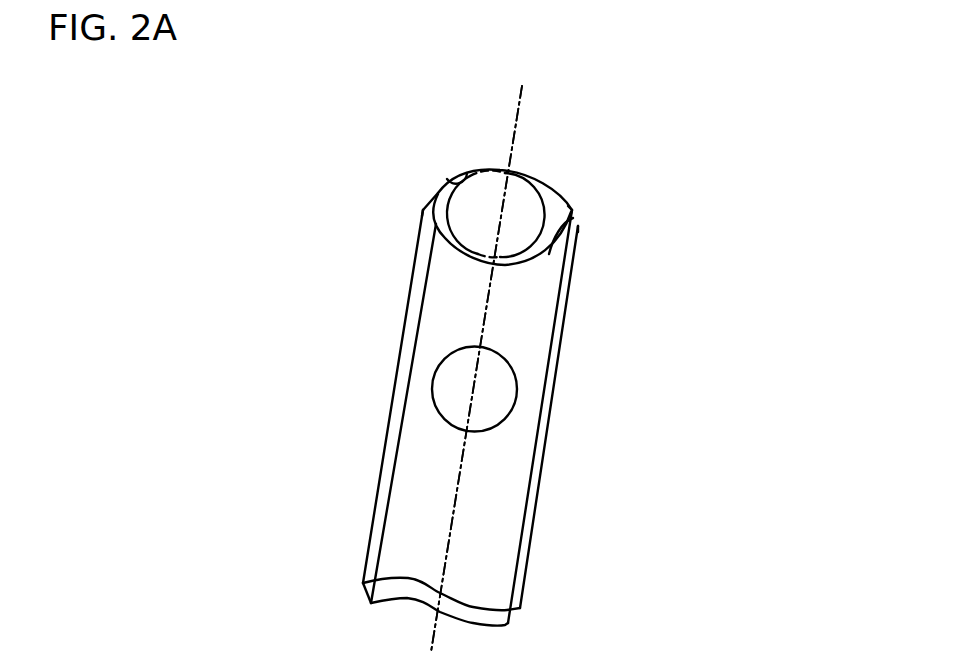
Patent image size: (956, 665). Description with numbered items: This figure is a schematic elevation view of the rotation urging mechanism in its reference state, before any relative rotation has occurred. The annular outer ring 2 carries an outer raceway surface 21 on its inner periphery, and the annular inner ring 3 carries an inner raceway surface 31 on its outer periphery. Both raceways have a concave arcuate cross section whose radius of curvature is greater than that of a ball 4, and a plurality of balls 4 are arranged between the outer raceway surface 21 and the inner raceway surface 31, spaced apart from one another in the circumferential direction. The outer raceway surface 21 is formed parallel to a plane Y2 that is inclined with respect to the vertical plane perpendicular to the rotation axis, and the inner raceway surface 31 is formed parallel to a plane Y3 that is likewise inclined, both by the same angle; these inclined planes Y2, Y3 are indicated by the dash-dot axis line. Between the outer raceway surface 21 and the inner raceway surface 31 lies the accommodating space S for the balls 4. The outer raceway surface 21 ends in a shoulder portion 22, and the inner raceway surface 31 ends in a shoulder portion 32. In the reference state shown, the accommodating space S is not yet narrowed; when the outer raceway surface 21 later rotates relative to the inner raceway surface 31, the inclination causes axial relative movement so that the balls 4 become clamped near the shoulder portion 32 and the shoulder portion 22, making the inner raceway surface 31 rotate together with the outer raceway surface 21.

The outer ring 2 is at (433, 201).
The outer raceway surface 21 is at (447, 184).
The shoulder portion 22 is at (441, 189).
The inner ring 3 is at (560, 321).
The inner raceway surface 31 is at (573, 218).
The shoulder portion 32 is at (424, 210).
The ball 4 is at (517, 398).
The accommodating space S is at (570, 203).
The plane Y2 is at (522, 116).
The plane Y3 is at (476, 369).